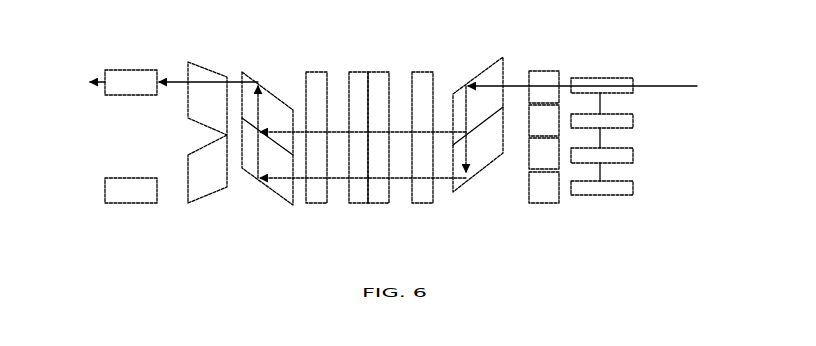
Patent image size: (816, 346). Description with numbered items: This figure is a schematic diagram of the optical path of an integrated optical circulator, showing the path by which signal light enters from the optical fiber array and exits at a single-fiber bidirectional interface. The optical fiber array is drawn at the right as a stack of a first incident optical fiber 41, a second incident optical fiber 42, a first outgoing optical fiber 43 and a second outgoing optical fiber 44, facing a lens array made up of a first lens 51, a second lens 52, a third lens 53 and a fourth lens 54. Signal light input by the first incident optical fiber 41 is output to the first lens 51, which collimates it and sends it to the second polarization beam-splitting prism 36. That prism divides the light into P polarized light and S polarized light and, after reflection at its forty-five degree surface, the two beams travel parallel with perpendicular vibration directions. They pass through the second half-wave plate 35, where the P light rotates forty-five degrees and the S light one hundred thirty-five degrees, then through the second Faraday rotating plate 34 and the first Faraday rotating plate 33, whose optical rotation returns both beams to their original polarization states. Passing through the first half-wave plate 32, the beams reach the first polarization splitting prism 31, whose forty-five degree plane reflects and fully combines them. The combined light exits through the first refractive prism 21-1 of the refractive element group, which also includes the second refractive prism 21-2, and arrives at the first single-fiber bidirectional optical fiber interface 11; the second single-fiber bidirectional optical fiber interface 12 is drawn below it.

The first single-fiber bidirectional optical fiber interface 11 is at (118, 70).
The second single-fiber bidirectional optical fiber interface 12 is at (113, 203).
The first refractive prism 21-1 is at (225, 72).
The second refractive prism 21-2 is at (197, 205).
The first polarization splitting prism 31 is at (282, 205).
The first half-wave plate 32 is at (310, 203).
The first Faraday rotating plate 33 is at (353, 203).
The second Faraday rotating plate 34 is at (373, 203).
The second half-wave plate 35 is at (417, 203).
The second polarization beam-splitting prism 36 is at (458, 192).
The first incident optical fiber 41 is at (613, 78).
The second incident optical fiber 42 is at (632, 128).
The first outgoing optical fiber 43 is at (632, 163).
The second outgoing optical fiber 44 is at (632, 195).
The first lens 51 is at (528, 70).
The second lens 52 is at (529, 127).
The third lens 53 is at (529, 165).
The fourth lens 54 is at (537, 203).